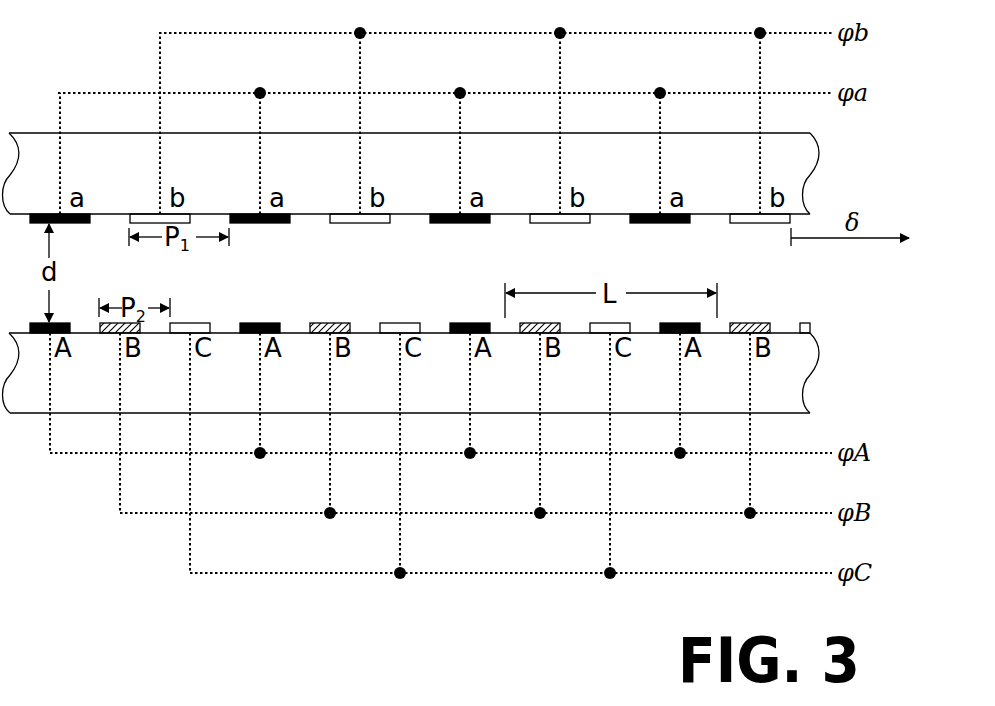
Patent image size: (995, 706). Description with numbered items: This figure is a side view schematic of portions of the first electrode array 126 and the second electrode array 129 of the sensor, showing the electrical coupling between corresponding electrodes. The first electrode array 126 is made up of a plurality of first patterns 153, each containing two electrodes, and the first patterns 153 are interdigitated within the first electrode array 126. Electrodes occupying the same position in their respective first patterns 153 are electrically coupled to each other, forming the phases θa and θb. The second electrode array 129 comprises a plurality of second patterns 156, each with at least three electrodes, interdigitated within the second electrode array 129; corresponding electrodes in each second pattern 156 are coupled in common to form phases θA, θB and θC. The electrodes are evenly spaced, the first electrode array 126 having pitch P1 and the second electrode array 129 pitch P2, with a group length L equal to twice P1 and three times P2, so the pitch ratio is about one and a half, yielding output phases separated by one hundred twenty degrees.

The first electrode array 126 is at (762, 247).
The second electrode array 129 is at (768, 310).
The first pattern 153 is at (500, 225).
The second pattern 156 is at (430, 322).